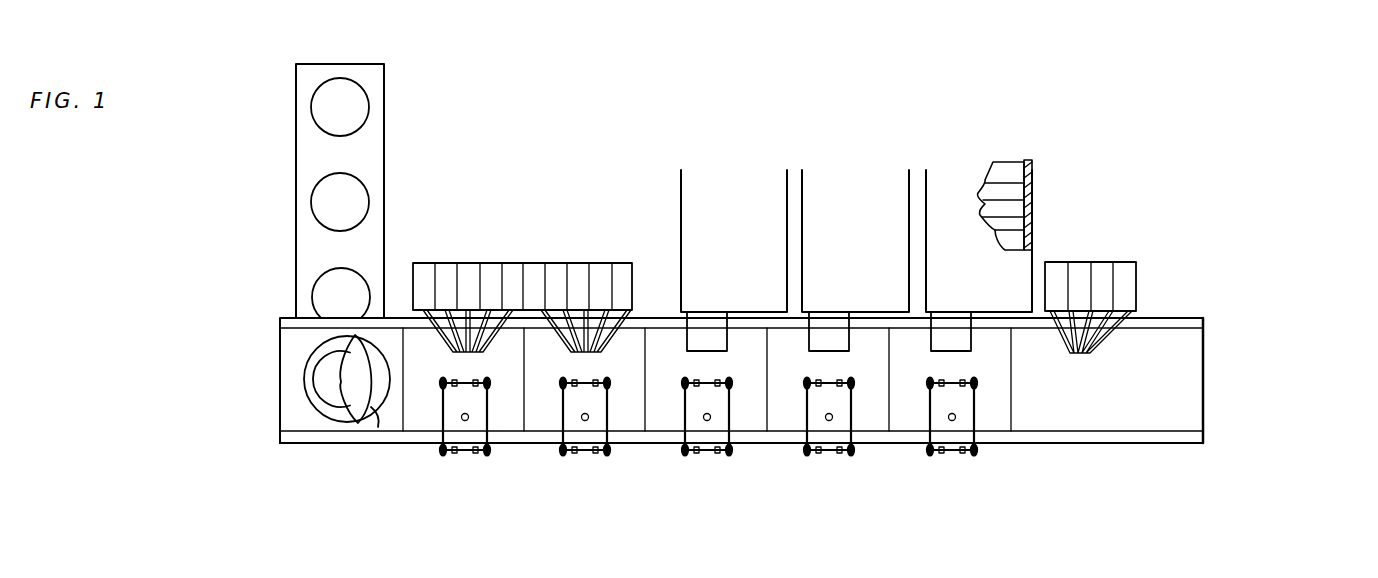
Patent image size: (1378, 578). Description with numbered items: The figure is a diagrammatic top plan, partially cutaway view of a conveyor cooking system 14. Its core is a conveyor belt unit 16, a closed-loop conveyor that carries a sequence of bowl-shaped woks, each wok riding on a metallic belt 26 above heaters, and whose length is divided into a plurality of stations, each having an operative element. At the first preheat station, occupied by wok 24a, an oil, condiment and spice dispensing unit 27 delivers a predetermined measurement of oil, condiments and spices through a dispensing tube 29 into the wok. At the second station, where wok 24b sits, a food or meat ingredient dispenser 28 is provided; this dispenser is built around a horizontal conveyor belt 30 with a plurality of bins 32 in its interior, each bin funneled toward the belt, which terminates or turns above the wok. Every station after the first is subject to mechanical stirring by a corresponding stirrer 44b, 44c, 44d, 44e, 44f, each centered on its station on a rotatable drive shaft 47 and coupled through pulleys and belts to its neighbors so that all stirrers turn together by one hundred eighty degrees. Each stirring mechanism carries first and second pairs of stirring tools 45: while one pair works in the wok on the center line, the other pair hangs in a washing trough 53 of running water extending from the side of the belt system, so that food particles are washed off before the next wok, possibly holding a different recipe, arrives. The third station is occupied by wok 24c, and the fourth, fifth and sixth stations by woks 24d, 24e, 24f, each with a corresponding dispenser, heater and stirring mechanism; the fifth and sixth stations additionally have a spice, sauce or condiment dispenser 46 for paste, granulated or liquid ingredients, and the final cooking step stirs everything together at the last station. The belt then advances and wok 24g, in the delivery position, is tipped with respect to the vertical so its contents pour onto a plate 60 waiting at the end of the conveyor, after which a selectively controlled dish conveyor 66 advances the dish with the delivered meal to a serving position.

The conveyor cooking system 14 is at (1240, 181).
The conveyor belt unit 16 is at (295, 343).
The wok 24a is at (1085, 408).
The wok 24b is at (917, 397).
The wok 24c is at (795, 397).
The wok 24d is at (673, 397).
The wok 24e is at (556, 400).
The wok 24f is at (437, 400).
The wok 24g is at (378, 427).
The metallic belt 26 is at (659, 345).
The oil, condiment and spice dispensing unit 27 is at (1093, 260).
The food or meat ingredient dispenser 28 is at (723, 185).
The dispensing tube 29 is at (1122, 322).
The horizontal conveyor belt 30 is at (952, 327).
The bins 32 is at (1017, 178).
The stirrer 44b is at (955, 440).
The stirrer 44c is at (833, 438).
The stirrer 44d is at (715, 435).
The stirring means 44e is at (588, 442).
The stirring means 44f is at (468, 442).
The stirring tools 45 is at (975, 452).
The spice, sauce or condiment dispenser 46 is at (580, 280).
The rotatable drive shaft 47 is at (548, 575).
The washing trough 53 is at (1178, 437).
The plate 60 is at (322, 112).
The dish conveyor 66 is at (310, 158).